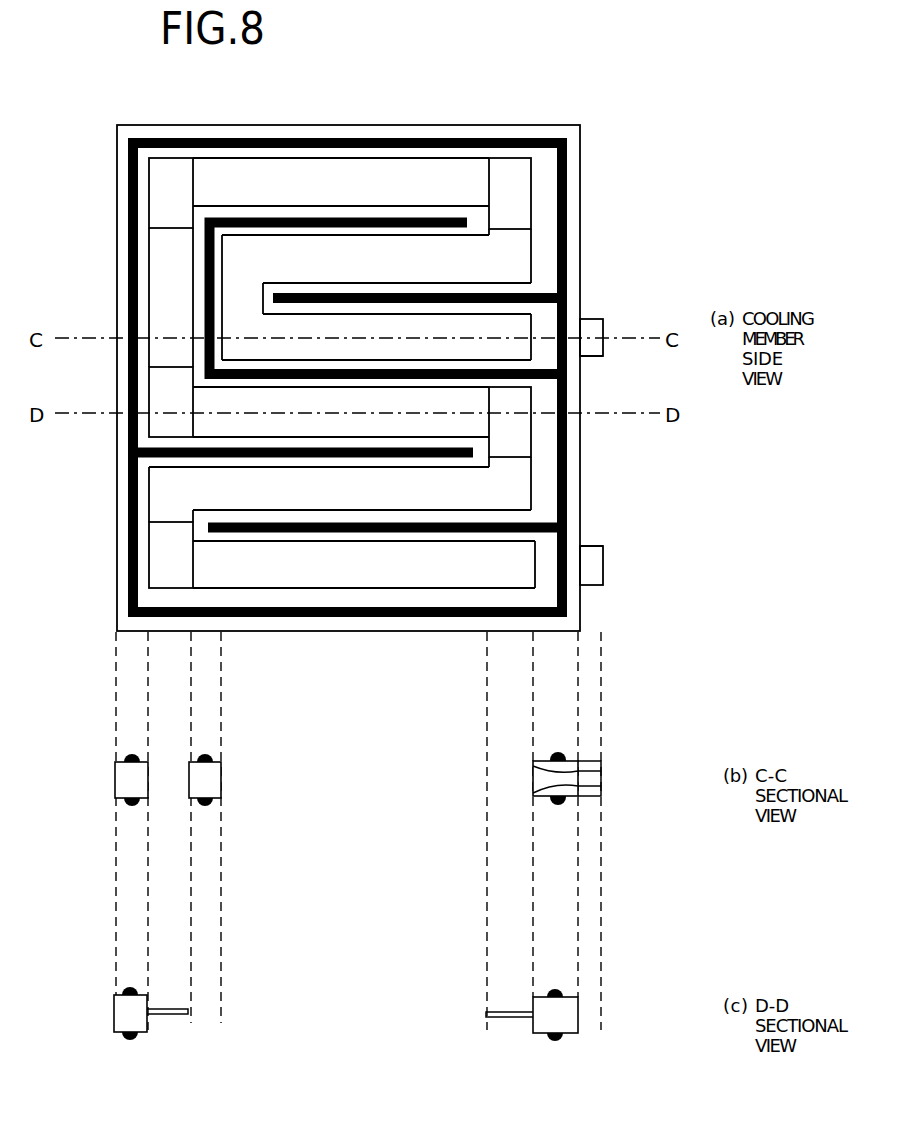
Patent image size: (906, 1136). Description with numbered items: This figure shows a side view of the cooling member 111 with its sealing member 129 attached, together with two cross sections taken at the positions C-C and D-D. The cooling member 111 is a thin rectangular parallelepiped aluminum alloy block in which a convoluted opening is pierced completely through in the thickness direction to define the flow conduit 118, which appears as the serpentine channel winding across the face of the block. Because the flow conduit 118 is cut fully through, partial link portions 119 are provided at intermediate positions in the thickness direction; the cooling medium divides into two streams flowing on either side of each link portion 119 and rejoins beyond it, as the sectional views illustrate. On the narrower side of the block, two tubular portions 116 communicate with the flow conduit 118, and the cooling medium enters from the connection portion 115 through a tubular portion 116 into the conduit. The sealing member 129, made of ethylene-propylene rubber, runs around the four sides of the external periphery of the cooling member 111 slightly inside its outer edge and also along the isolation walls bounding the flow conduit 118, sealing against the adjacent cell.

The cooling member 111 is at (582, 129).
The connection portion 115 is at (595, 319).
The tubular portion 116 is at (603, 353).
The flow conduit 118 is at (343, 170).
The link portion 119 is at (533, 192).
The sealing member 129 is at (323, 612).